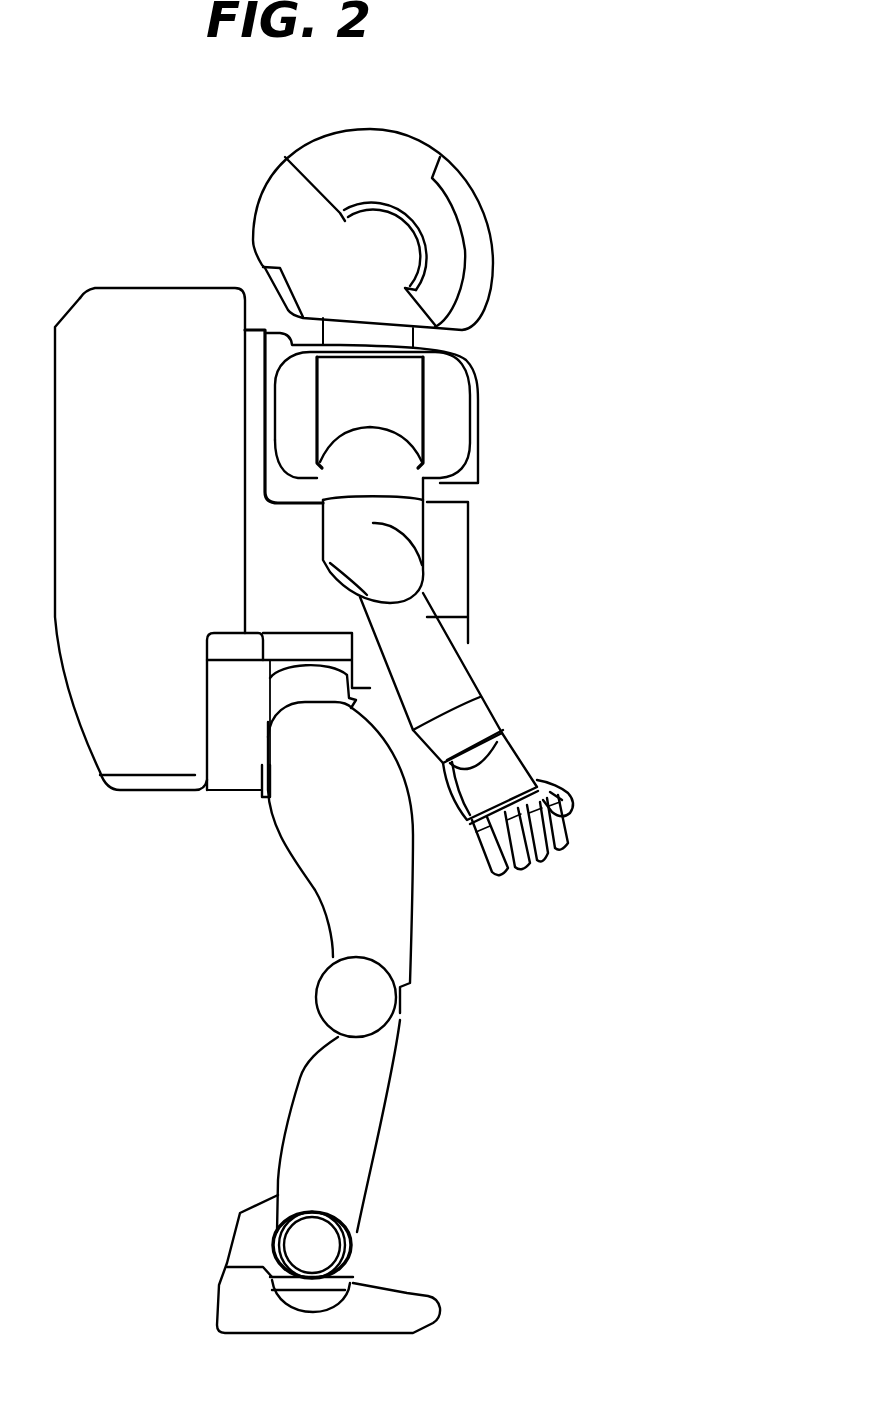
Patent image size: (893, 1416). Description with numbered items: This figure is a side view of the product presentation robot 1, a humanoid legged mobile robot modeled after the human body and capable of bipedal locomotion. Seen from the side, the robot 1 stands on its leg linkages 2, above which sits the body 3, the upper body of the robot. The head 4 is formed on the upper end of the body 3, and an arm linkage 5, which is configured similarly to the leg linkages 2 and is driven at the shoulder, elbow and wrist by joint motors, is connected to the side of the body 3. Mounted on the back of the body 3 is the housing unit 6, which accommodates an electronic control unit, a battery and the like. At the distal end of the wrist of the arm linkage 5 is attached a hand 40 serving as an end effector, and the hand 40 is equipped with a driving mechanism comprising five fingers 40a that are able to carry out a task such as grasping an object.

The product presentation robot 1 is at (523, 405).
The leg linkage 2 is at (430, 1008).
The body 3 is at (443, 554).
The head 4 is at (327, 131).
The arm linkage 5 is at (493, 677).
The housing unit 6 is at (110, 288).
The hand 40 is at (532, 752).
The finger 40a is at (568, 827).